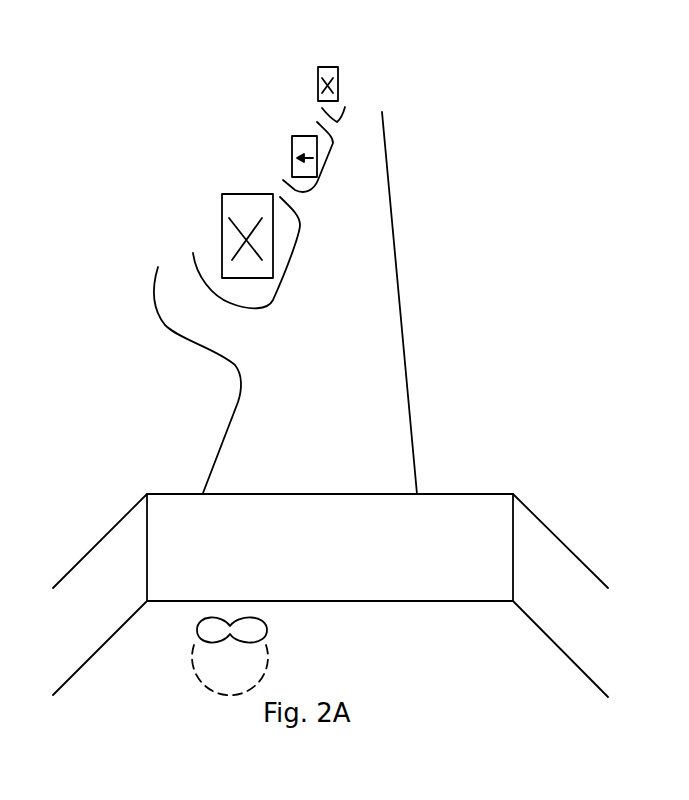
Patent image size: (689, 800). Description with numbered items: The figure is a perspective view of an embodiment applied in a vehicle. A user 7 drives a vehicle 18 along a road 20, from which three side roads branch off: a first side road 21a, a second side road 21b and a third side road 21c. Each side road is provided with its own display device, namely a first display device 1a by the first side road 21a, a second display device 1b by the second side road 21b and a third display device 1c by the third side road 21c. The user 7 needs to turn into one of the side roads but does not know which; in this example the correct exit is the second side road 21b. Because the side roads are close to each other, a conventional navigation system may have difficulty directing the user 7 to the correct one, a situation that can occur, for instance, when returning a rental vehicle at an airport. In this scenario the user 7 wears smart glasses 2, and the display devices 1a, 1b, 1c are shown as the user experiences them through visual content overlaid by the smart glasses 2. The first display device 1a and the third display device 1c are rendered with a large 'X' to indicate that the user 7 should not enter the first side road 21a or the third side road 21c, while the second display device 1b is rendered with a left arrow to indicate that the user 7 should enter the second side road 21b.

The vehicle 18 is at (61, 527).
The road 20 is at (388, 328).
The first side road 21a is at (177, 308).
The second side road 21b is at (286, 189).
The third side road 21c is at (317, 118).
The first display device 1a is at (222, 218).
The second display device 1b is at (292, 137).
The third display device 1c is at (337, 70).
The smart glasses 2 is at (197, 633).
The user 7 is at (270, 652).